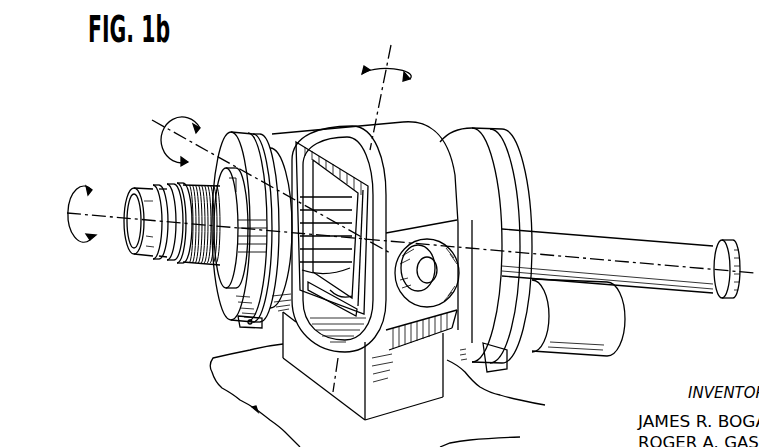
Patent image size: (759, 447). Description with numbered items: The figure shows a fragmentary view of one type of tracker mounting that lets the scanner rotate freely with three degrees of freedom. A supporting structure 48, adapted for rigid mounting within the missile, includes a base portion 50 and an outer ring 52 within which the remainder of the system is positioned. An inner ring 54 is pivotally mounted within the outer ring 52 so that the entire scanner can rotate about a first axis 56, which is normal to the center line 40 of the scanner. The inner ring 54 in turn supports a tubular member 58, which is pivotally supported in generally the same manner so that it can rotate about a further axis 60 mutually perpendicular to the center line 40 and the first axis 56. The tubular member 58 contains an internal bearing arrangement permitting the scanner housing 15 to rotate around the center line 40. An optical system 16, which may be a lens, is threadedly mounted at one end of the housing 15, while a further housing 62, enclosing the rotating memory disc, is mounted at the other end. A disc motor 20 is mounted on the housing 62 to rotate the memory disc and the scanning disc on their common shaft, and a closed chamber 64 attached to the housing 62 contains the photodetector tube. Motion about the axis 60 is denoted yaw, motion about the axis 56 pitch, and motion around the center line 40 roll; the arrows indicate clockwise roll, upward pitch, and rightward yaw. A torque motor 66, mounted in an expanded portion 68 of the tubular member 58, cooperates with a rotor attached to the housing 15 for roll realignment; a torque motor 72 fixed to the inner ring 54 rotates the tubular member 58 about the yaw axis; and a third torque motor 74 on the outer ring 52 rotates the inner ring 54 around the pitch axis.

The housing 15 is at (230, 186).
The optical system 16 is at (145, 257).
The disc motor 20 is at (557, 333).
The center line 40 is at (118, 216).
The supporting structure 48 is at (377, 395).
The base portion 50 is at (298, 354).
The outer ring 52 is at (350, 136).
The inner ring 54 is at (320, 157).
The first axis 56 is at (168, 128).
The tubular member 58 is at (320, 248).
The further axis 60 is at (388, 214).
The further housing 62 is at (485, 137).
The closed chamber 64 is at (590, 240).
The torque motor 66 is at (230, 278).
The expanded portion 68 is at (230, 322).
The torque motor 72 is at (337, 307).
The third torque motor 74 is at (422, 247).